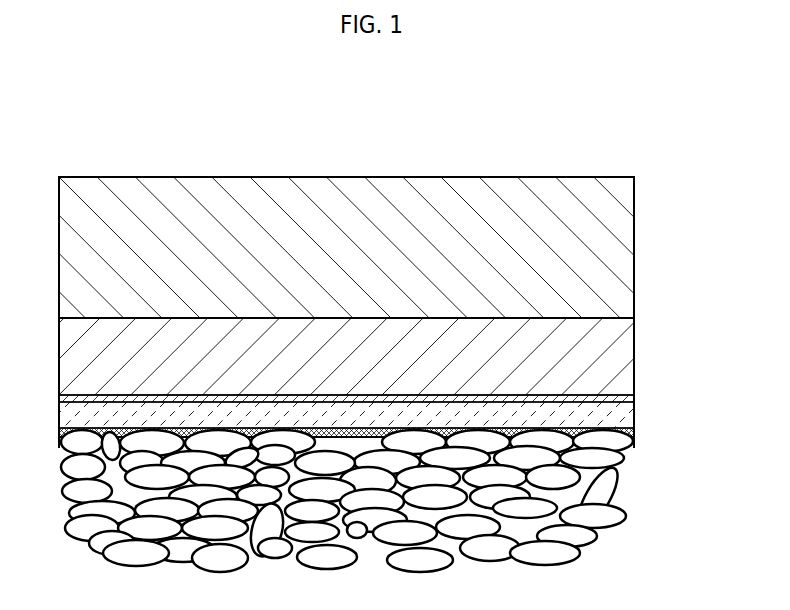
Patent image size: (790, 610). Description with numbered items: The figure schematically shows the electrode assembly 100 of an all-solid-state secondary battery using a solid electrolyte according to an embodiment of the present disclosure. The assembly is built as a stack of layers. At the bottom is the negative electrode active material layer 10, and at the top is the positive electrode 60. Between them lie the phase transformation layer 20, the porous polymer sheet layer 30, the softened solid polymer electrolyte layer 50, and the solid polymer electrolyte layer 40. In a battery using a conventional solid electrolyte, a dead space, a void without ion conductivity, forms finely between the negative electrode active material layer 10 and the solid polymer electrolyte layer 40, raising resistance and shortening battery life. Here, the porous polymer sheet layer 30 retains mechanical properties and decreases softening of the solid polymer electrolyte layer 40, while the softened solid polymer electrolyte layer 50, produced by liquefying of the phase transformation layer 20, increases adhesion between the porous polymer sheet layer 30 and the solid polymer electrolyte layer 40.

The electrode assembly 100 is at (203, 100).
The negative electrode active material layer 10 is at (623, 518).
The phase transformation layer 20 is at (634, 436).
The porous polymer sheet layer 30 is at (634, 415).
The solid polymer electrolyte layer 40 is at (634, 351).
The softened solid polymer electrolyte layer 50 is at (634, 399).
The positive electrode 60 is at (634, 239).